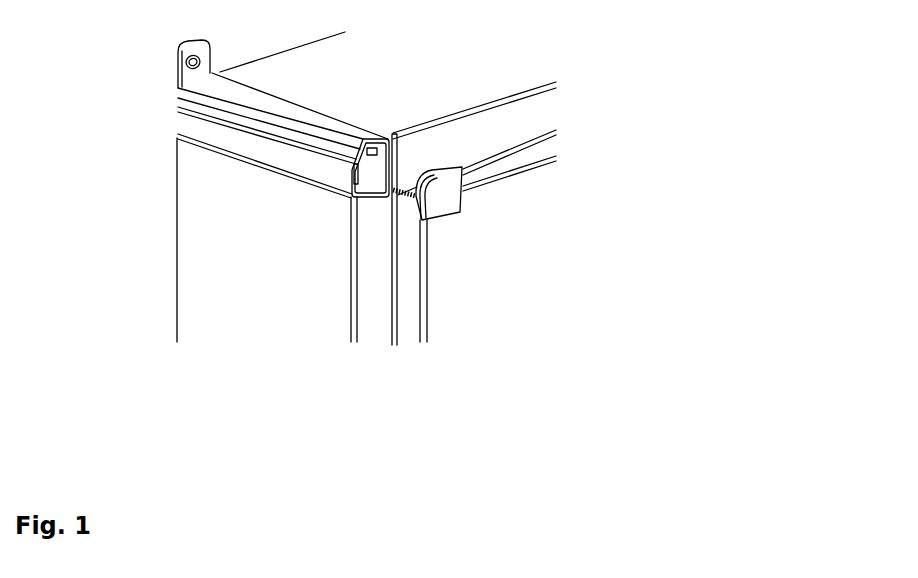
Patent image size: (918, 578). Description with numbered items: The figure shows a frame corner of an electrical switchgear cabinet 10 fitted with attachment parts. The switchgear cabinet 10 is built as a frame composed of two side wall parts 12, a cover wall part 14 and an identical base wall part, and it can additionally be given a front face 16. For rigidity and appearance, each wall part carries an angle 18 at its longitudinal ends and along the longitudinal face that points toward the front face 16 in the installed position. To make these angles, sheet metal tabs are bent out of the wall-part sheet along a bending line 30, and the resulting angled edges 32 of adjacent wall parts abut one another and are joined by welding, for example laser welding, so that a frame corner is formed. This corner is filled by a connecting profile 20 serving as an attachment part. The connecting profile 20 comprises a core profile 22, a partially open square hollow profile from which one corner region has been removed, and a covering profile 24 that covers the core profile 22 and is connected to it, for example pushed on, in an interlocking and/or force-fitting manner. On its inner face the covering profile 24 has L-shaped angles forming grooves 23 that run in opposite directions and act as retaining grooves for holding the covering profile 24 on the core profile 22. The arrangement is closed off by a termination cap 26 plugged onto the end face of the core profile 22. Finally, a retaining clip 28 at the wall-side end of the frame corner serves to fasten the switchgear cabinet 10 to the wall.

The electrical switchgear cabinet 10 is at (504, 368).
The side wall part 12 is at (204, 293).
The cover wall part 14 is at (318, 89).
The front face 16 is at (524, 251).
The angle 18 is at (547, 105).
The connecting profile 20 is at (177, 118).
The core profile 22 is at (372, 186).
The grooves 23 is at (361, 152).
The covering profile 24 is at (243, 141).
The termination cap 26 is at (439, 193).
The retaining clip 28 is at (186, 43).
The bending line 30 is at (222, 71).
The angled edges 32 is at (492, 155).